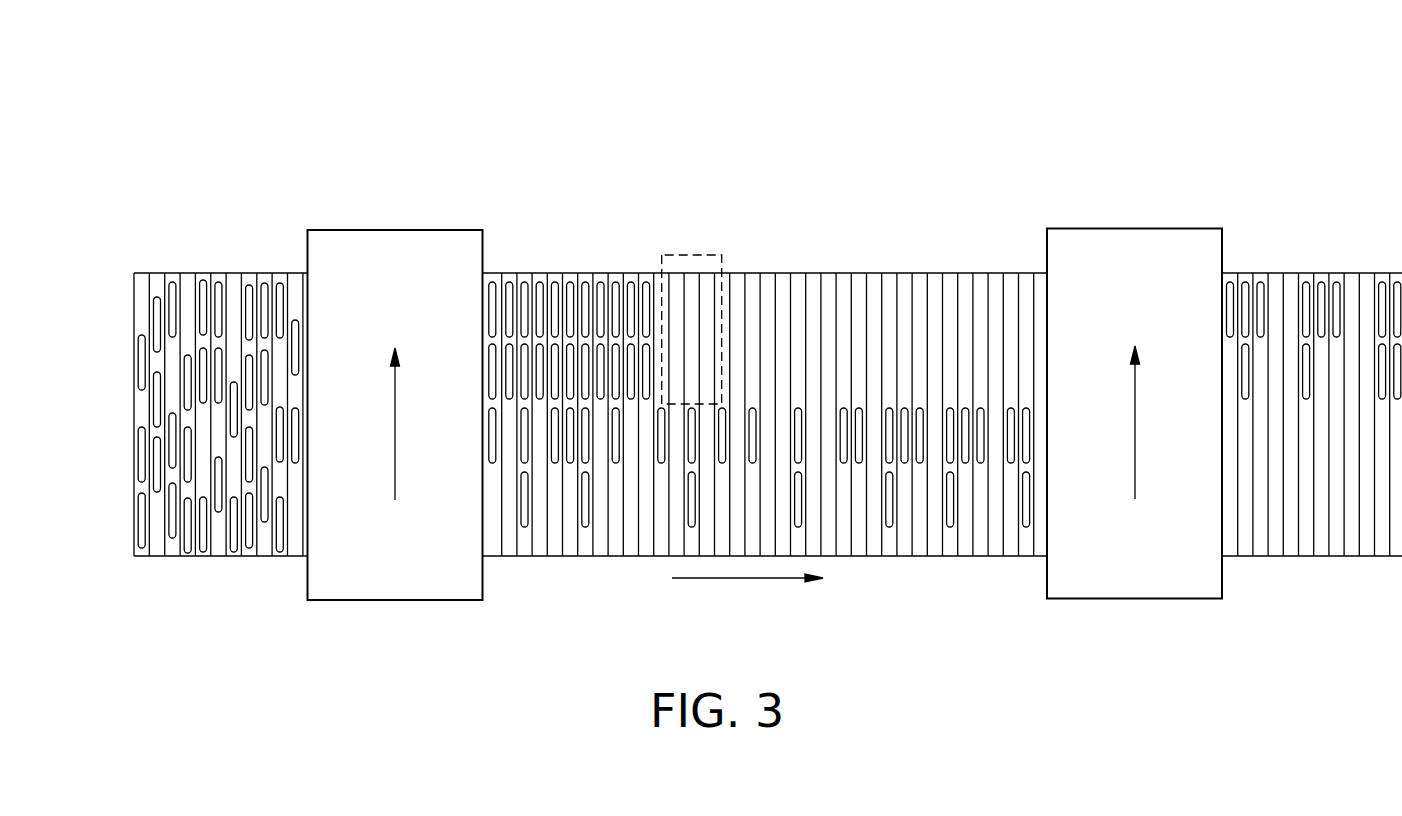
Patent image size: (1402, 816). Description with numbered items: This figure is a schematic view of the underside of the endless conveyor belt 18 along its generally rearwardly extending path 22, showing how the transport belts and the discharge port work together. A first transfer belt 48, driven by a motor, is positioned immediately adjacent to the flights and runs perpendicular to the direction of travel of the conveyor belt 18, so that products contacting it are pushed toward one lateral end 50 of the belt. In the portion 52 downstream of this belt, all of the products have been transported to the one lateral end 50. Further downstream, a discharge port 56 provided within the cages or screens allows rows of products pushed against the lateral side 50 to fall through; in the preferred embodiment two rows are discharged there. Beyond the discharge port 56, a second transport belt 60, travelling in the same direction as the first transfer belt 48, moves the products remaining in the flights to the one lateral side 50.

The endless conveyor belt 18 is at (865, 557).
The generally rearwardly extending path 22 is at (765, 141).
The first transfer belt 48 is at (395, 594).
The lateral end 50 is at (585, 273).
The portion 52 is at (486, 222).
The discharge port 56 is at (697, 254).
The second transport belt 60 is at (1134, 592).